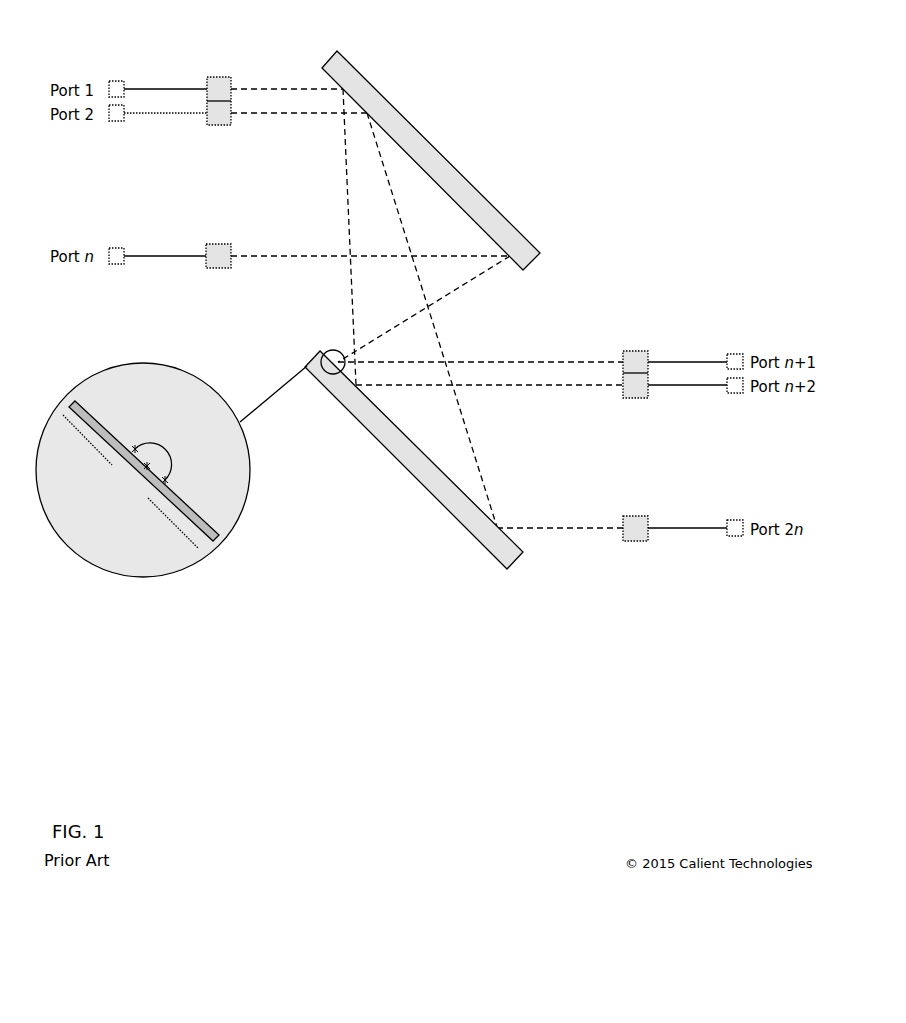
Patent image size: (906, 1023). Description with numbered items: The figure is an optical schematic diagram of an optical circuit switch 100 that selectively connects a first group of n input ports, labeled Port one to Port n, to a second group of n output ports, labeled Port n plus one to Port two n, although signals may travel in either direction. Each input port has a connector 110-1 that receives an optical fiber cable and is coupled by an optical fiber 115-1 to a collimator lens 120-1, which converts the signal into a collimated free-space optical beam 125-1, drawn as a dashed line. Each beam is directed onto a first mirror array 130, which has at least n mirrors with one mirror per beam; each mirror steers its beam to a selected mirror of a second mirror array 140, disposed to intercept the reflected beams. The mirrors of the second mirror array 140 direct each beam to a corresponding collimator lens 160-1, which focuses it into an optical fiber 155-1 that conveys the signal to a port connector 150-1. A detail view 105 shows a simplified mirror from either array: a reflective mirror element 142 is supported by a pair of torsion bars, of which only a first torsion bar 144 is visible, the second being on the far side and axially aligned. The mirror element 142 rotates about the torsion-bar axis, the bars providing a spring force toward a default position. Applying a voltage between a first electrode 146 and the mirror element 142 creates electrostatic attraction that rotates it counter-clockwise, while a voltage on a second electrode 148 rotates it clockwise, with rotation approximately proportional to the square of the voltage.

The optical circuit switch 100 is at (640, 54).
The detail view 105 is at (171, 483).
The connector 110-1 is at (117, 80).
The optical fiber 115-1 is at (150, 88).
The collimator lens 120-1 is at (222, 77).
The optical beam 125-1 is at (311, 88).
The first mirror array 130 is at (396, 108).
The second mirror array 140 is at (407, 470).
The mirror element 142 is at (115, 418).
The first torsion bar 144 is at (165, 478).
The first electrode 146 is at (88, 440).
The second electrode 148 is at (164, 513).
The connector 150-1 is at (732, 352).
The optical fiber 155-1 is at (694, 360).
The collimator lens 160-1 is at (635, 351).